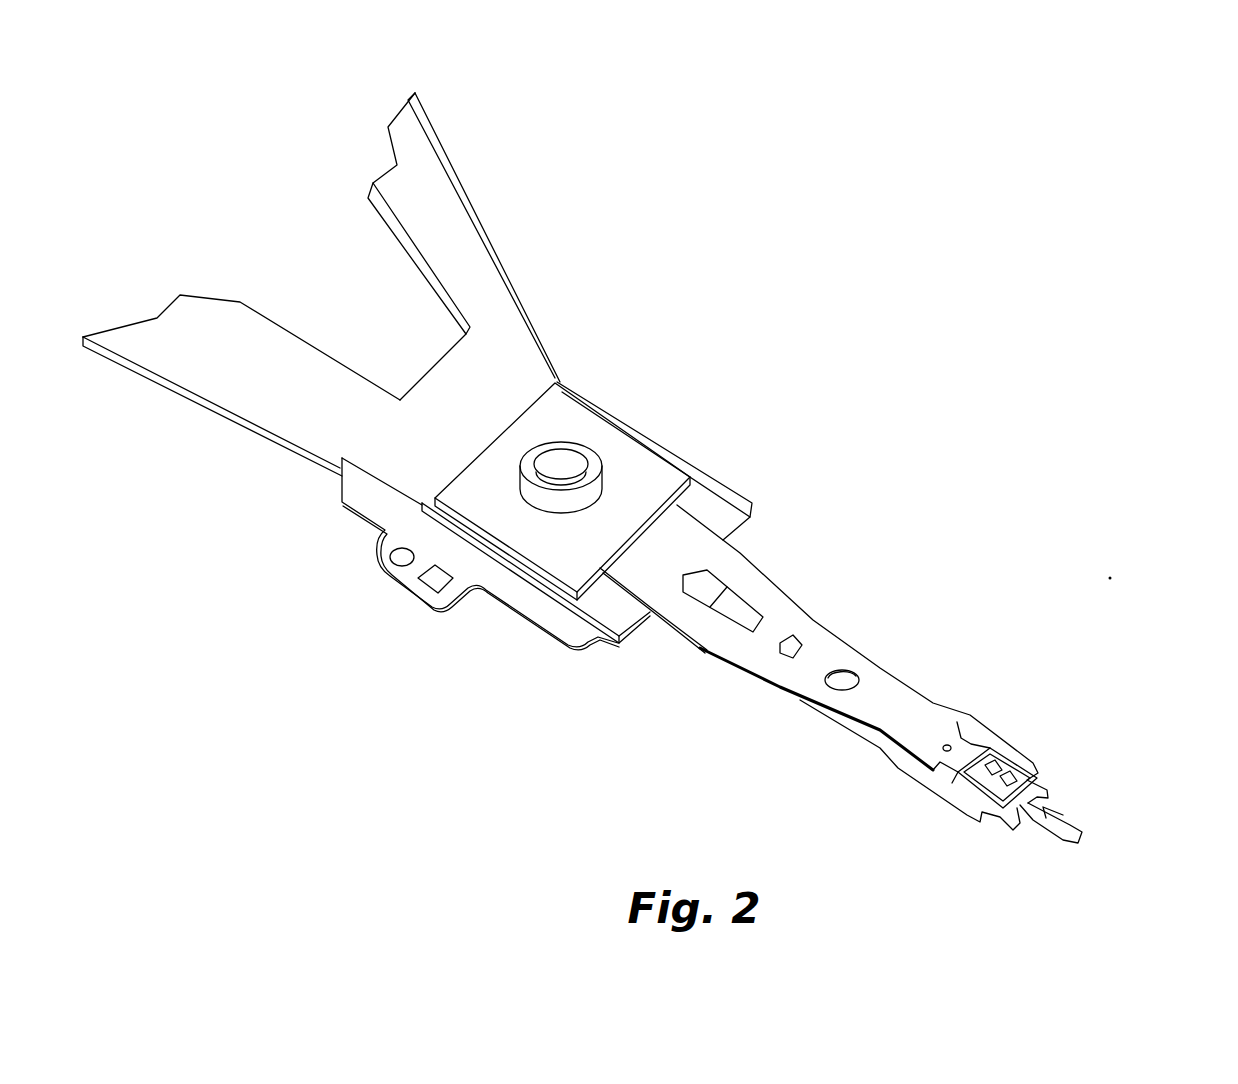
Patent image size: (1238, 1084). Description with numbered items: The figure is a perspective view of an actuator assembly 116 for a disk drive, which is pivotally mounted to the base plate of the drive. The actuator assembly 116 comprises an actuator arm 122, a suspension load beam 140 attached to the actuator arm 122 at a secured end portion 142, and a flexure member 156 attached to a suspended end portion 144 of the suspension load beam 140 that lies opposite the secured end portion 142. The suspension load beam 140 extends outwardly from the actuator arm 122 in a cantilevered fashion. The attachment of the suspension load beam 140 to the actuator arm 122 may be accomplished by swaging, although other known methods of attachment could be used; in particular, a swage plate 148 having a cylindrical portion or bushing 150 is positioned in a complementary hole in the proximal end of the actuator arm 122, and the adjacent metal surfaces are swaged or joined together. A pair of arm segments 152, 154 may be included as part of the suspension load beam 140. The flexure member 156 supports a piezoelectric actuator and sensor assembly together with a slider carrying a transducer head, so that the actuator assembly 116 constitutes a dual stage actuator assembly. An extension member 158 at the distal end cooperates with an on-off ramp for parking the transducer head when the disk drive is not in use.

The actuator assembly 116 is at (803, 587).
The actuator arm 122 is at (438, 242).
The suspension load beam 140 is at (788, 628).
The secured end portion 142 is at (663, 433).
The suspended end portion 144 is at (967, 716).
The swage plate 148 is at (552, 422).
The cylindrical portion or bushing 150 is at (592, 460).
The arm segment 152 is at (757, 592).
The arm segment 154 is at (718, 633).
The flexure member 156 is at (937, 707).
The extension member 158 is at (1074, 822).